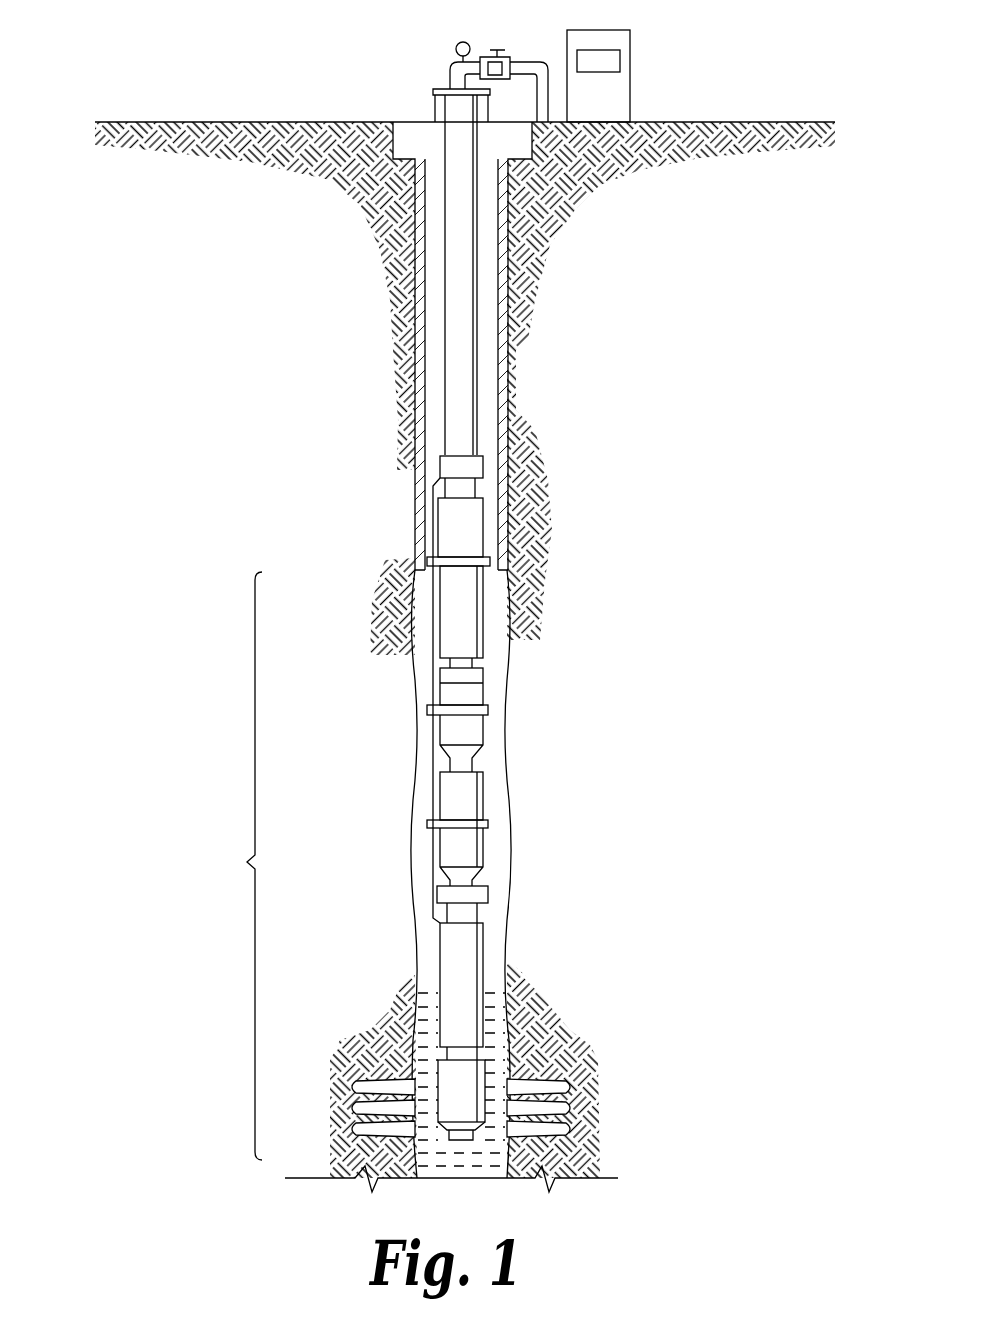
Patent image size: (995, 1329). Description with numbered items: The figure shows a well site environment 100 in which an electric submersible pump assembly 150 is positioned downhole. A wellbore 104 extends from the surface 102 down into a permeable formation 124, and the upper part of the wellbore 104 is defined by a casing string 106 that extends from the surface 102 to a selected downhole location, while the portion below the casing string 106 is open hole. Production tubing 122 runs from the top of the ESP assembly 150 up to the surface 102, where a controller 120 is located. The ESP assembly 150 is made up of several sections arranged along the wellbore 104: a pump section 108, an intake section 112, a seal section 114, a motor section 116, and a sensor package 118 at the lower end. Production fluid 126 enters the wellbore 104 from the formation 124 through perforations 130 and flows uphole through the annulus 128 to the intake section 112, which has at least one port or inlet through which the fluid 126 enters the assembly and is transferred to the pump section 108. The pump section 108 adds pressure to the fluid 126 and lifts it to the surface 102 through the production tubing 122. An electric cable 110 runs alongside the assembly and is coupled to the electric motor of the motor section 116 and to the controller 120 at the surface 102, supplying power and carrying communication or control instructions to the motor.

The well site environment 100 is at (155, 42).
The surface 102 is at (760, 121).
The wellbore 104 is at (509, 352).
The casing string 106 is at (437, 432).
The pump section 108 is at (460, 592).
The electric cable 110 is at (428, 660).
The intake section 112 is at (462, 690).
The seal section 114 is at (457, 795).
The motor section 116 is at (460, 963).
The sensor package 118 is at (455, 1078).
The controller 120 is at (630, 40).
The production tubing 122 is at (457, 290).
The permeable formation 124 is at (634, 510).
The production fluid 126 is at (491, 1010).
The annulus 128 is at (492, 935).
The perforations 130 is at (545, 1077).
The electric submersible pump assembly 150 is at (236, 866).